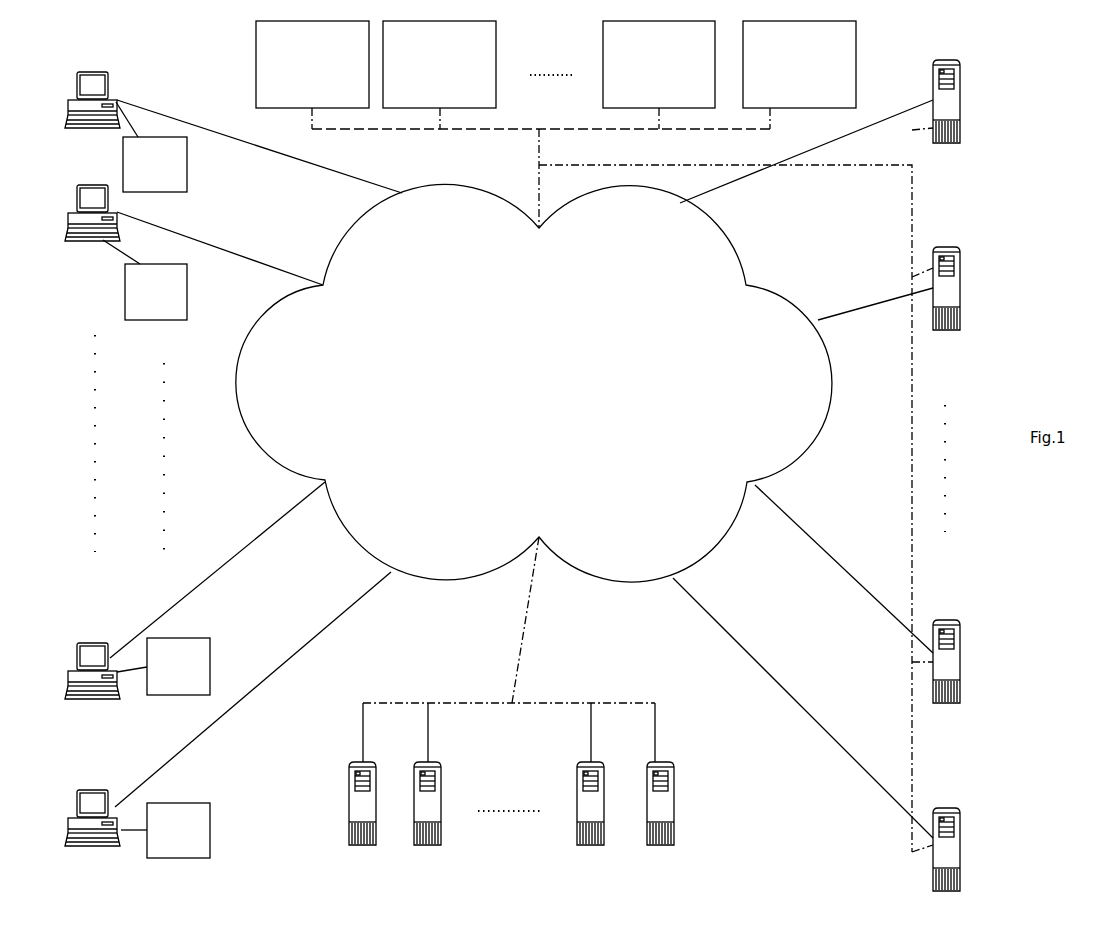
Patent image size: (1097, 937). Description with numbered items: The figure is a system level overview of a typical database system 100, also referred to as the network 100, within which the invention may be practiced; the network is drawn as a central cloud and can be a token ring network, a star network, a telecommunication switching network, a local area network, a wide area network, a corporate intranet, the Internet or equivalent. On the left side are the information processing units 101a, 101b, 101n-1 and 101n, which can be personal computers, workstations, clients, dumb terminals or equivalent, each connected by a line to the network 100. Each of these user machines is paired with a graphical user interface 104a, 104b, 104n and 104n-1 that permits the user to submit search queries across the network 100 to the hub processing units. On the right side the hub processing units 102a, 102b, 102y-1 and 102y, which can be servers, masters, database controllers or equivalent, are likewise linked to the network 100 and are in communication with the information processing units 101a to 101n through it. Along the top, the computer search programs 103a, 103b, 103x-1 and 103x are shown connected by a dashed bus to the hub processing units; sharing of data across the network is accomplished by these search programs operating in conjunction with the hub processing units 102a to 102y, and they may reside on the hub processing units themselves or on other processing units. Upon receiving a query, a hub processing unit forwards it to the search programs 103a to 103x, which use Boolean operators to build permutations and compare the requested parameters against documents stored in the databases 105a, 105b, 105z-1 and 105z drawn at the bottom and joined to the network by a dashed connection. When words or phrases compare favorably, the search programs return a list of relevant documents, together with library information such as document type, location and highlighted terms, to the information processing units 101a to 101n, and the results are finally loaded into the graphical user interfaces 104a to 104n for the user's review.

The database system 100 is at (520, 463).
The information processing unit 101a is at (233, 132).
The information processing unit 101b is at (194, 235).
The information processing unit 101n-1 is at (195, 604).
The information processing unit 101n is at (228, 717).
The hub processing unit 102a is at (845, 131).
The hub processing unit 102b is at (914, 288).
The hub processing unit 102y-1 is at (891, 594).
The hub processing unit 102y is at (842, 734).
The computer search program 103a is at (312, 75).
The computer search program 103b is at (439, 75).
The computer search program 103x-1 is at (659, 75).
The computer search program 103x is at (799, 75).
The graphical user interface 104a is at (151, 147).
The graphical user interface 104b is at (145, 280).
The graphical user interface 104n is at (163, 666).
The graphical user interface 104n-1 is at (165, 830).
The database 105a is at (367, 787).
The database 105b is at (430, 787).
The database 105z-1 is at (600, 787).
The database 105z is at (663, 787).